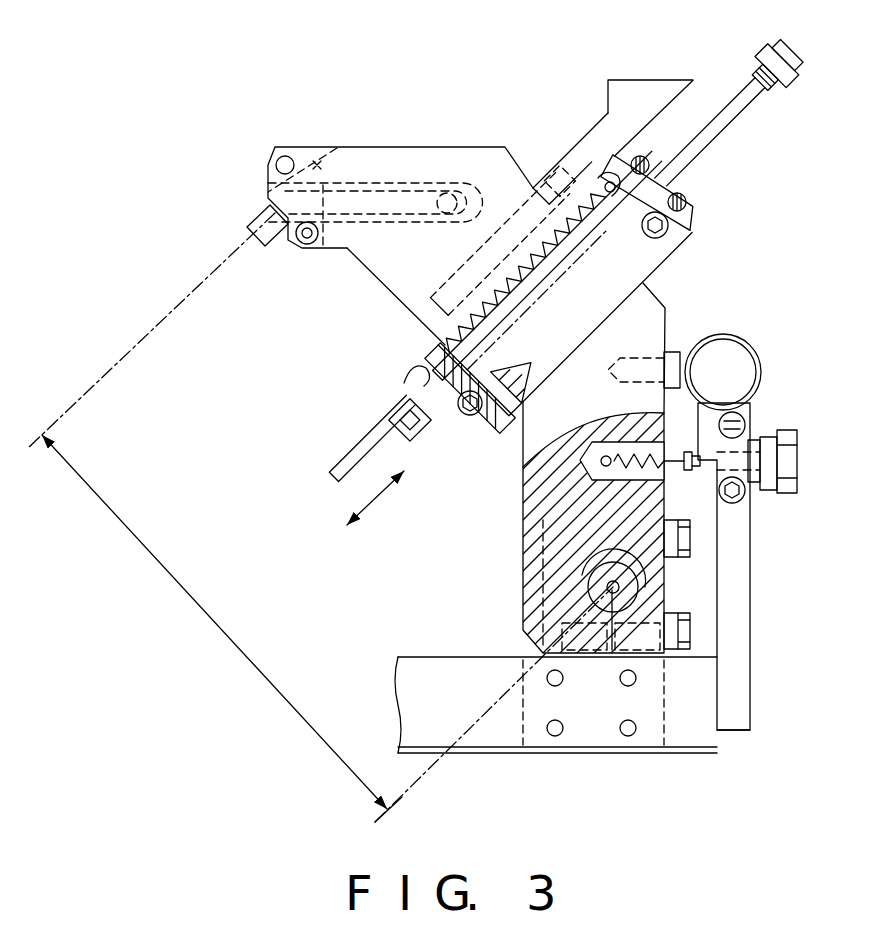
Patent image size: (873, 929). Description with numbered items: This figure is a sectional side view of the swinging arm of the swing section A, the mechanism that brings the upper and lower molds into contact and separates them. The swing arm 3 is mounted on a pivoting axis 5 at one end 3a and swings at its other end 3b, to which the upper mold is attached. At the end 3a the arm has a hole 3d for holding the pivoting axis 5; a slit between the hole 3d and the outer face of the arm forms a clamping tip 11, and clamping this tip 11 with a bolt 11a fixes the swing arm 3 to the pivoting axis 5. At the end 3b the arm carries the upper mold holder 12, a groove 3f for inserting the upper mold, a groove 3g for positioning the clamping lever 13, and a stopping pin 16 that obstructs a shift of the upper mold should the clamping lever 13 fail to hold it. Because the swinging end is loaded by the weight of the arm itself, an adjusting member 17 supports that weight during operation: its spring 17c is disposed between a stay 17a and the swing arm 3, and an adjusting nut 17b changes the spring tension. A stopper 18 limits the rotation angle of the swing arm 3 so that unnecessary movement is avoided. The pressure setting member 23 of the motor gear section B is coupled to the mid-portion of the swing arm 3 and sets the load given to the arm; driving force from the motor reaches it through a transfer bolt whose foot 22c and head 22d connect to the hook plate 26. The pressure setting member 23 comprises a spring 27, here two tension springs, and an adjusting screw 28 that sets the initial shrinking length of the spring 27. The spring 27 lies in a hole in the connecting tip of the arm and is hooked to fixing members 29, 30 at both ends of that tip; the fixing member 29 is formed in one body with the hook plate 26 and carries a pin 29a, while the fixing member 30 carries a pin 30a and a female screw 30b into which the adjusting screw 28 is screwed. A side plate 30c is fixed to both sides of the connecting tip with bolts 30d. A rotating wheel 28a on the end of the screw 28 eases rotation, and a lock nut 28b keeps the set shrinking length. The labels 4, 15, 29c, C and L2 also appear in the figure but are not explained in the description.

The swing arm 3 is at (377, 250).
The one end of the swing arm 3a is at (662, 583).
The other end of the swing arm 3b is at (289, 142).
The hole 3d is at (585, 583).
The groove 3f is at (332, 142).
The groove 3g is at (372, 180).
The base 4 is at (565, 752).
The pivoting axis 5 is at (583, 600).
The clamping tip 11 is at (654, 604).
The bolt 11a is at (690, 634).
The upper mold holder 12 is at (325, 242).
The clamping lever 13 is at (403, 180).
The hole 15 is at (453, 182).
The stopping pin 16 is at (268, 146).
The adjusting member 17 is at (684, 481).
The stay 17a is at (737, 732).
The adjusting nut 17b is at (800, 467).
The spring 17c is at (670, 447).
The stopper 18 is at (760, 356).
The foot of the transfer bolt 22c is at (332, 478).
The head of the transfer bolt 22d is at (406, 400).
The pressure setting member 23 is at (724, 186).
The hook plate 26 is at (407, 430).
The spring 27 is at (557, 265).
The adjusting screw 28 is at (727, 107).
The rotating wheel 28a is at (797, 60).
The lock nut 28b is at (644, 158).
The fixing member 29 is at (487, 437).
The pin 29a is at (405, 382).
The block 29c is at (446, 434).
The fixing member 30 is at (694, 244).
The pin 30a is at (600, 186).
The screw member 30b is at (609, 182).
The side plate 30c is at (563, 363).
The bolts 30d is at (672, 228).
The swing section A is at (352, 128).
The motor gear section B is at (400, 375).
The center C is at (582, 568).
The distance L2 is at (215, 517).